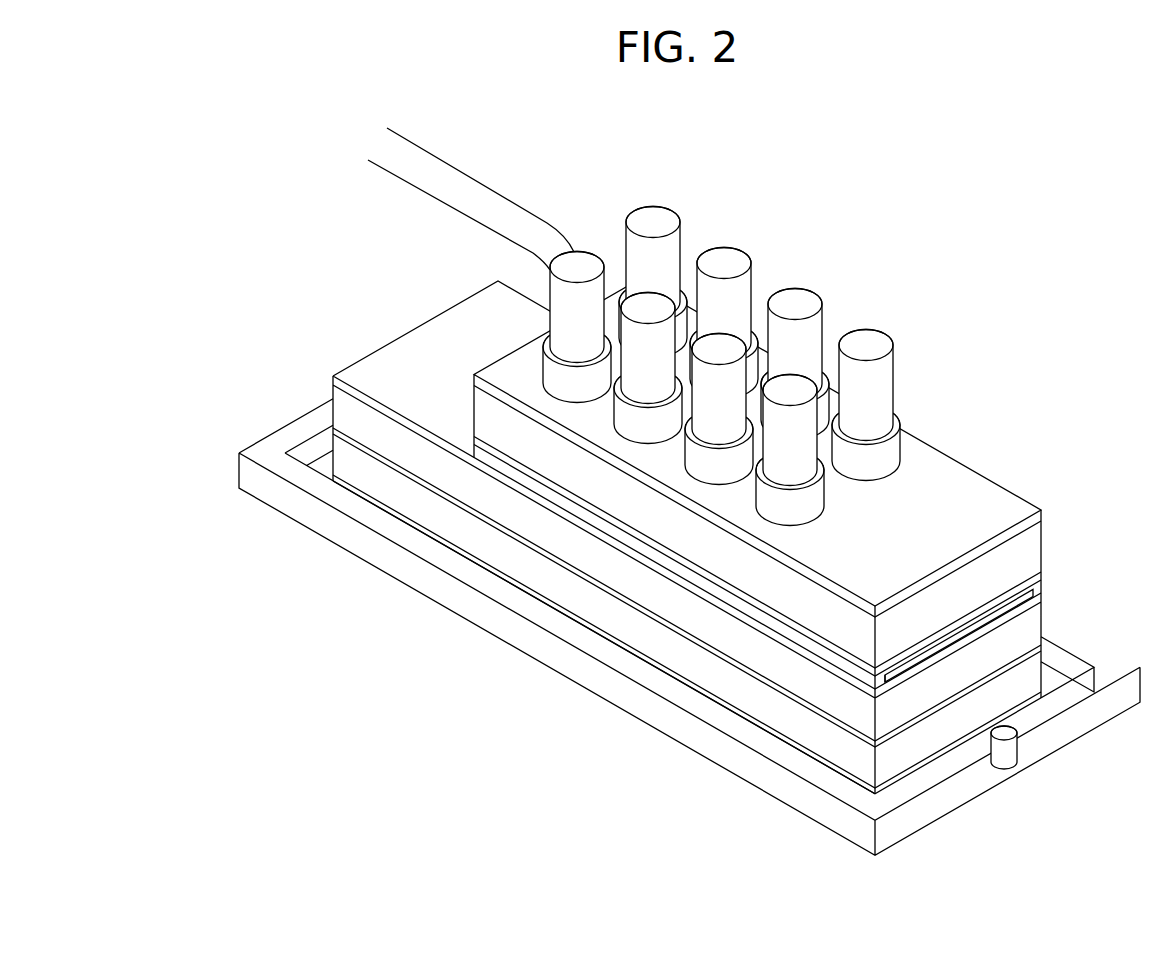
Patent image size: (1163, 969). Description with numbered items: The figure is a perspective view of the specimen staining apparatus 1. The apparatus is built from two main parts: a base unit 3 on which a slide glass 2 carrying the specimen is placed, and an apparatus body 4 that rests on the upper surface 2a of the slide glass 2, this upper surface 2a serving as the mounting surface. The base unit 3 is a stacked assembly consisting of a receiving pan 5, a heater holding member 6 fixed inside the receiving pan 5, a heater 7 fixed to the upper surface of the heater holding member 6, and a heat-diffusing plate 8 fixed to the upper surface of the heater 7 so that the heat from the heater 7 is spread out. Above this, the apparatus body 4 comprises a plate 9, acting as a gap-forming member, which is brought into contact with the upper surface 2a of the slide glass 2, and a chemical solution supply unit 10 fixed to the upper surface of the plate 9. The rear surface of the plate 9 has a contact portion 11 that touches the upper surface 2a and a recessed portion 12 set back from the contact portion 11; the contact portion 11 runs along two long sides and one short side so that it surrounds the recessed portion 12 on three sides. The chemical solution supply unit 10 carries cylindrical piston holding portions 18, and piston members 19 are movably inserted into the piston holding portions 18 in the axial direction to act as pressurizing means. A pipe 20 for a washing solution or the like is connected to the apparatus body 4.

The specimen staining apparatus 1 is at (250, 190).
The slide glass 2 is at (383, 342).
The upper surface 2a is at (458, 327).
The base unit 3 is at (288, 394).
The apparatus body 4 is at (1047, 497).
The receiving pan 5 is at (1045, 740).
The heater holding member 6 is at (688, 662).
The heater 7 is at (542, 553).
The heat-diffusing plate 8 is at (445, 473).
The plate 9 is at (1058, 585).
The chemical solution supply unit 10 is at (972, 486).
The contact portion 11 is at (882, 682).
The recessed portion 12 is at (1000, 604).
The piston holding portion 18 is at (888, 448).
The piston member 19 is at (872, 345).
The pipe 20 is at (430, 173).